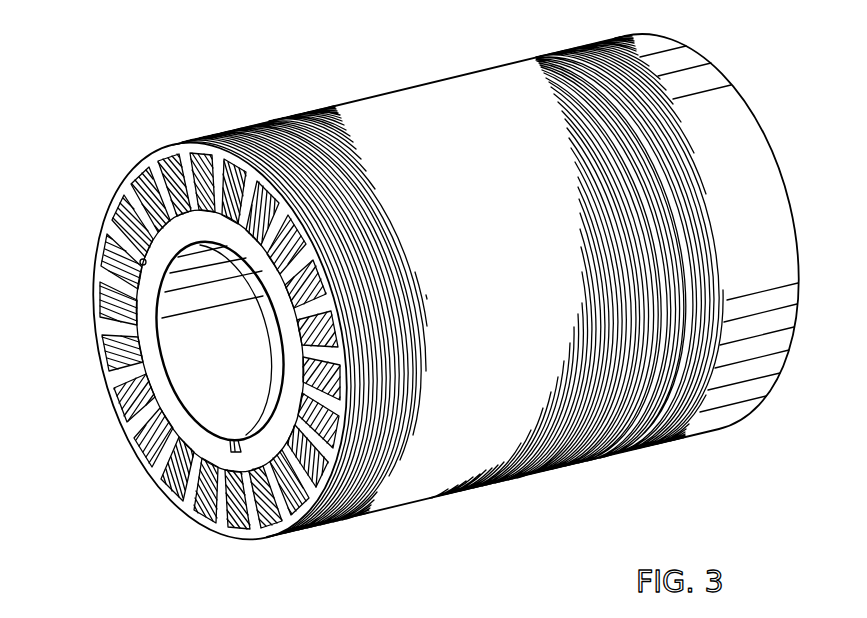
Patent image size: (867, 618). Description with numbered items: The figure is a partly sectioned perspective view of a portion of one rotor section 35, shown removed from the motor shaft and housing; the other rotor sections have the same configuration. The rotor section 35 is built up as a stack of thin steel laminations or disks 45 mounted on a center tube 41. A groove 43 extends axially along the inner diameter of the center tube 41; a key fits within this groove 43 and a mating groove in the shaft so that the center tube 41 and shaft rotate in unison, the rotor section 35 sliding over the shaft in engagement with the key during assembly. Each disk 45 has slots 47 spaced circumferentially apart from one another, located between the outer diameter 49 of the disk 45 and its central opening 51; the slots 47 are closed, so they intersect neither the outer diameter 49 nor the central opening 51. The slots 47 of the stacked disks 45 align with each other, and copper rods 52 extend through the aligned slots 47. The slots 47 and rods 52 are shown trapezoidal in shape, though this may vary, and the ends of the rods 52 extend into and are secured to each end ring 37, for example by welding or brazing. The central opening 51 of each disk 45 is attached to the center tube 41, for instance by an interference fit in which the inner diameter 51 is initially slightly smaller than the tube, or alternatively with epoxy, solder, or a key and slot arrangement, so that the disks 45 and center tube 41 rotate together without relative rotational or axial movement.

The rotor section 35 is at (440, 46).
The end ring 37 is at (710, 90).
The center tube 41 is at (150, 443).
The groove 43 is at (236, 438).
The disks 45 is at (372, 468).
The slots 47 is at (110, 318).
The outer diameter 49 is at (370, 97).
The central opening 51 is at (141, 260).
The copper rods 52 is at (126, 393).